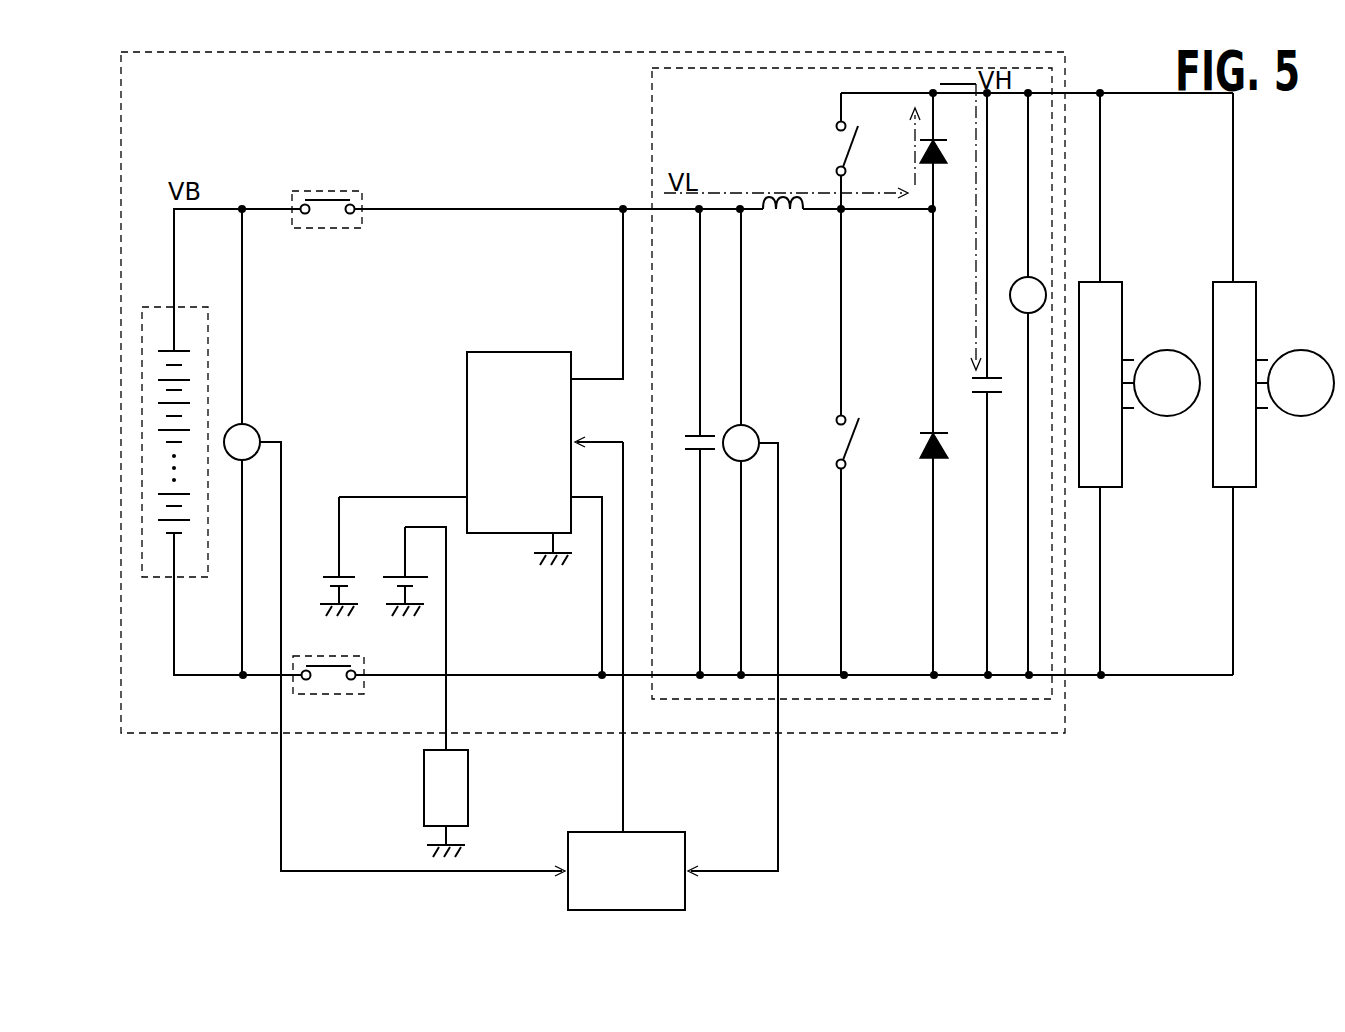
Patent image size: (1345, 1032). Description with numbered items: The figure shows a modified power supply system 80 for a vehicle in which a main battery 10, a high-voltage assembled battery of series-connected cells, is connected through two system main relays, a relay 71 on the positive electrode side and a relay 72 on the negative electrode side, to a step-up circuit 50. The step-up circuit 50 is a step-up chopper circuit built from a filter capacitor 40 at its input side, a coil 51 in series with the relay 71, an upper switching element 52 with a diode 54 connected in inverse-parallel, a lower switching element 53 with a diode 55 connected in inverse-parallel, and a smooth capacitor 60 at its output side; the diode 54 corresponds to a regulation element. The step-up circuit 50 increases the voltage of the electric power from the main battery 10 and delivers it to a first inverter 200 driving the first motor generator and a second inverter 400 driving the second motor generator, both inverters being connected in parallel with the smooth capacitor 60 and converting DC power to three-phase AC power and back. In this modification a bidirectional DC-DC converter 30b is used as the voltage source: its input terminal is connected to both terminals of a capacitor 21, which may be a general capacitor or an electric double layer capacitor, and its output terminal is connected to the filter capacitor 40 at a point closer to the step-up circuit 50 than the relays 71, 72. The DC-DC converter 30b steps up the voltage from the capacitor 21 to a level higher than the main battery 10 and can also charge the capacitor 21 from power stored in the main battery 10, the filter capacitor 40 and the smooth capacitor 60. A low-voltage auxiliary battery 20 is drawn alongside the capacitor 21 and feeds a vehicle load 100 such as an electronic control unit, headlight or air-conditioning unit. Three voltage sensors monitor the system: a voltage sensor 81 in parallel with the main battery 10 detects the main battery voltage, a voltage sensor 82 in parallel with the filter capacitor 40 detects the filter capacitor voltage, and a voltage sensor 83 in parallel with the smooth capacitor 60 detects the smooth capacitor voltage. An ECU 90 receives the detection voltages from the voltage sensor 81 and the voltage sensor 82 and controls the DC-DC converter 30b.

The main battery 10 is at (153, 307).
The auxiliary battery 20 is at (404, 576).
The capacitor 21 is at (339, 576).
The DC-DC converter 30b is at (538, 352).
The filter capacitor 40 is at (695, 436).
The step-up circuit 50 is at (650, 97).
The coil 51 is at (797, 213).
The switching element 52 is at (852, 143).
The switching element 53 is at (855, 438).
The diode 54 is at (938, 140).
The diode 55 is at (942, 432).
The smooth capacitor 60 is at (1010, 366).
The SMR 71 is at (345, 190).
The SMR 72 is at (332, 645).
The power supply system 80 is at (1065, 66).
The voltage sensor 81 is at (256, 428).
The voltage sensor 82 is at (753, 428).
The voltage sensor 83 is at (1020, 277).
The ECU 90 is at (664, 832).
The load 100 is at (470, 782).
The first inverter 200 is at (1129, 266).
The second inverter 400 is at (1250, 282).